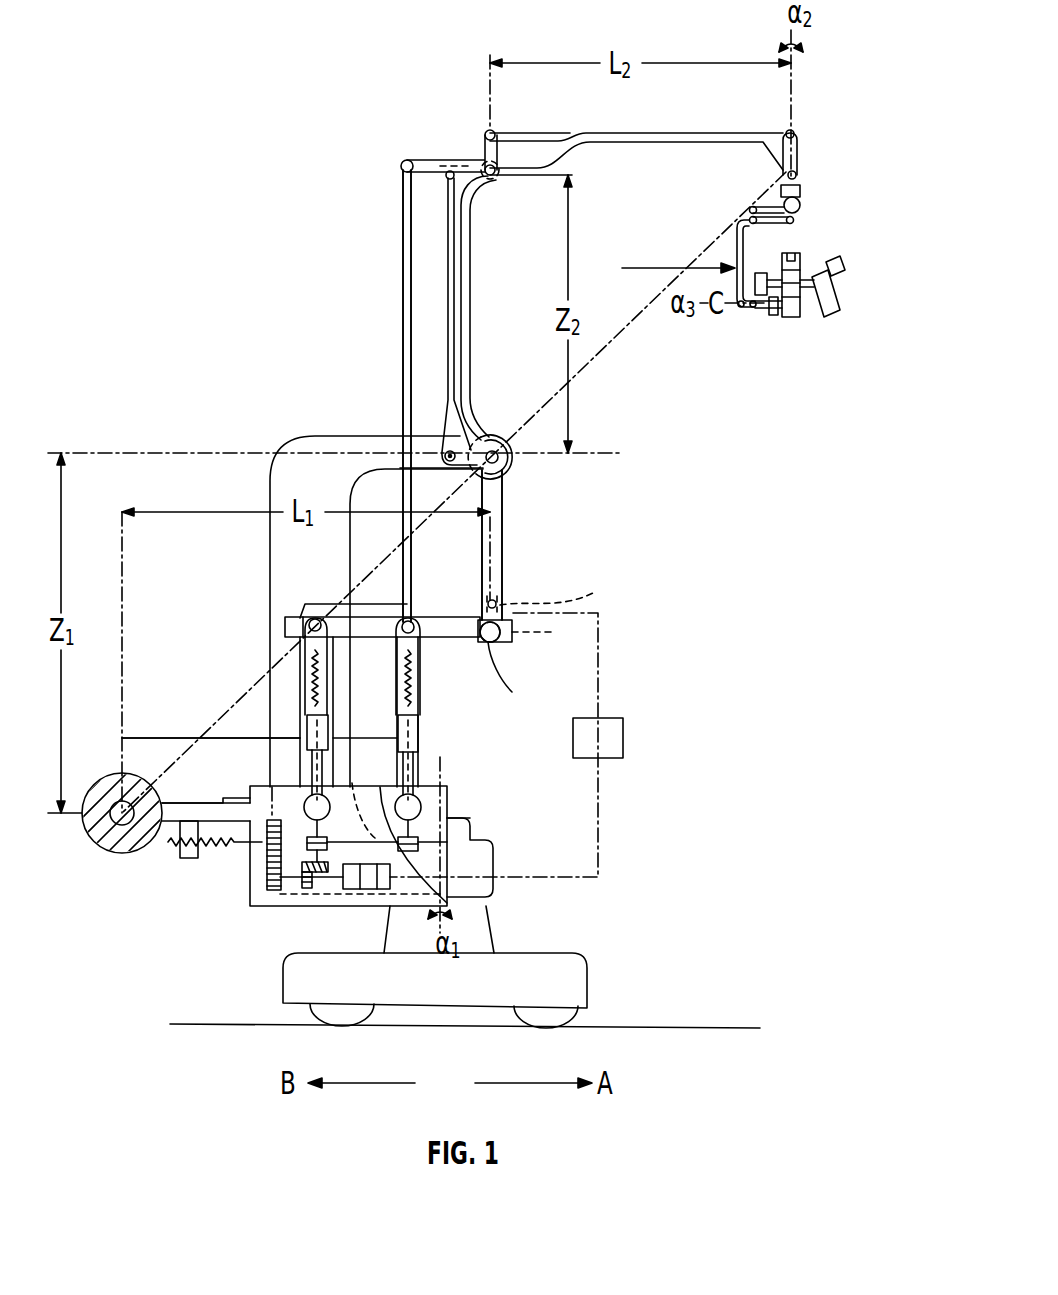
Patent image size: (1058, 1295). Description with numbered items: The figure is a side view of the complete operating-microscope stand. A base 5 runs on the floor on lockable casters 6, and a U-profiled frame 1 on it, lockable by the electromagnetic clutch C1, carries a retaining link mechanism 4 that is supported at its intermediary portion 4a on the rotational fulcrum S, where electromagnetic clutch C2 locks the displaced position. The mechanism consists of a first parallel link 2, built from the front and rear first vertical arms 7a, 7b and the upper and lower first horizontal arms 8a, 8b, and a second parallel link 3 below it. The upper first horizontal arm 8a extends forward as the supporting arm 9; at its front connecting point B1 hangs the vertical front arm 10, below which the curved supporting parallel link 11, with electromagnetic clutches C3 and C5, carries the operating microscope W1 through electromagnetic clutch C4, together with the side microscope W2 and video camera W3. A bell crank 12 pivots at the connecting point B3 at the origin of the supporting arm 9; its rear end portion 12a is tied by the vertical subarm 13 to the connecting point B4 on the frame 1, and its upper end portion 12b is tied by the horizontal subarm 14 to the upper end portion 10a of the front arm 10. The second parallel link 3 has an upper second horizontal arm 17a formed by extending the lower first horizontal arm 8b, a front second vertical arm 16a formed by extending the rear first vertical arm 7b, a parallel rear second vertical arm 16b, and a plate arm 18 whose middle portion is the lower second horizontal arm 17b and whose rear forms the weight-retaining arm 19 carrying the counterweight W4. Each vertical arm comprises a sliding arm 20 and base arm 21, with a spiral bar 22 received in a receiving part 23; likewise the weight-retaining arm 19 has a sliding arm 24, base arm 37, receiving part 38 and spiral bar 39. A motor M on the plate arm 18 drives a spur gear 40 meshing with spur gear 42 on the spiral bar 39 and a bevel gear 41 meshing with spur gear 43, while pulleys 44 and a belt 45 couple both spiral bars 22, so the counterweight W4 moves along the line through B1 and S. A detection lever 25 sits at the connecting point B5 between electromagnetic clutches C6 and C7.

The frame 1 is at (330, 568).
The first parallel link 2 is at (376, 396).
The second parallel link 3 is at (362, 628).
The retaining link mechanism 4 is at (579, 530).
The intermediary portion 4a is at (459, 419).
The base 5 is at (474, 980).
The casters 6 is at (444, 1038).
The front first vertical arm 7a is at (490, 308).
The rear first vertical arm 7b is at (364, 396).
The upper first horizontal arm 8a is at (385, 137).
The lower first horizontal arm 8b is at (525, 577).
The supporting arm 9 is at (636, 171).
The front arm 10 is at (831, 142).
The upper end portion of front arm 10a is at (820, 107).
The supporting parallel link 11 is at (661, 258).
The bell crank 12 is at (452, 126).
The rear end portion of bell crank 12a is at (400, 197).
The upper end portion of bell crank 12b is at (459, 93).
The vertical subarm 13 is at (415, 321).
The horizontal subarm 14 is at (530, 104).
The front second vertical arm 16a is at (465, 712).
The rear second vertical arm 16b is at (258, 712).
The upper second horizontal arm 17a is at (382, 589).
The lower second horizontal arm 17b is at (259, 721).
The plate arm 18 is at (395, 842).
The weight-retaining arm 19 is at (211, 722).
The sliding arms 20 is at (266, 643).
The base arms 21 is at (281, 795).
The spiral bars 22 is at (244, 657).
The receiving parts 23 is at (281, 750).
The sliding arm 24 is at (639, 738).
The detection lever 25 is at (561, 584).
The base arm 37 is at (206, 856).
The receiving part 38 is at (182, 867).
The spiral bar 39 is at (189, 876).
The spur gear 40 is at (289, 910).
The bevel gear 41 is at (309, 915).
The spur gear 42 is at (244, 889).
The spur gear 43 is at (342, 904).
The pulleys 44 is at (385, 823).
The belt 45 is at (472, 885).
The connecting point B1 is at (824, 176).
The connecting point B3 is at (500, 207).
The connecting point B4 is at (438, 482).
The connecting point B5 is at (516, 660).
The electromagnetic clutch C1 is at (510, 831).
The electromagnetic clutch C2 is at (519, 468).
The electromagnetic clutch C3 is at (757, 174).
The electromagnetic clutch C4 is at (751, 336).
The electromagnetic clutch C5 is at (808, 209).
The electromagnetic clutch C6 is at (515, 688).
The electromagnetic clutch C7 is at (531, 639).
The operating microscope W1 is at (771, 298).
The side microscope W2 is at (853, 288).
The video camera W3 is at (809, 259).
The counterweight W4 is at (125, 823).
The rotational fulcrum S is at (523, 545).
The motor M is at (335, 875).